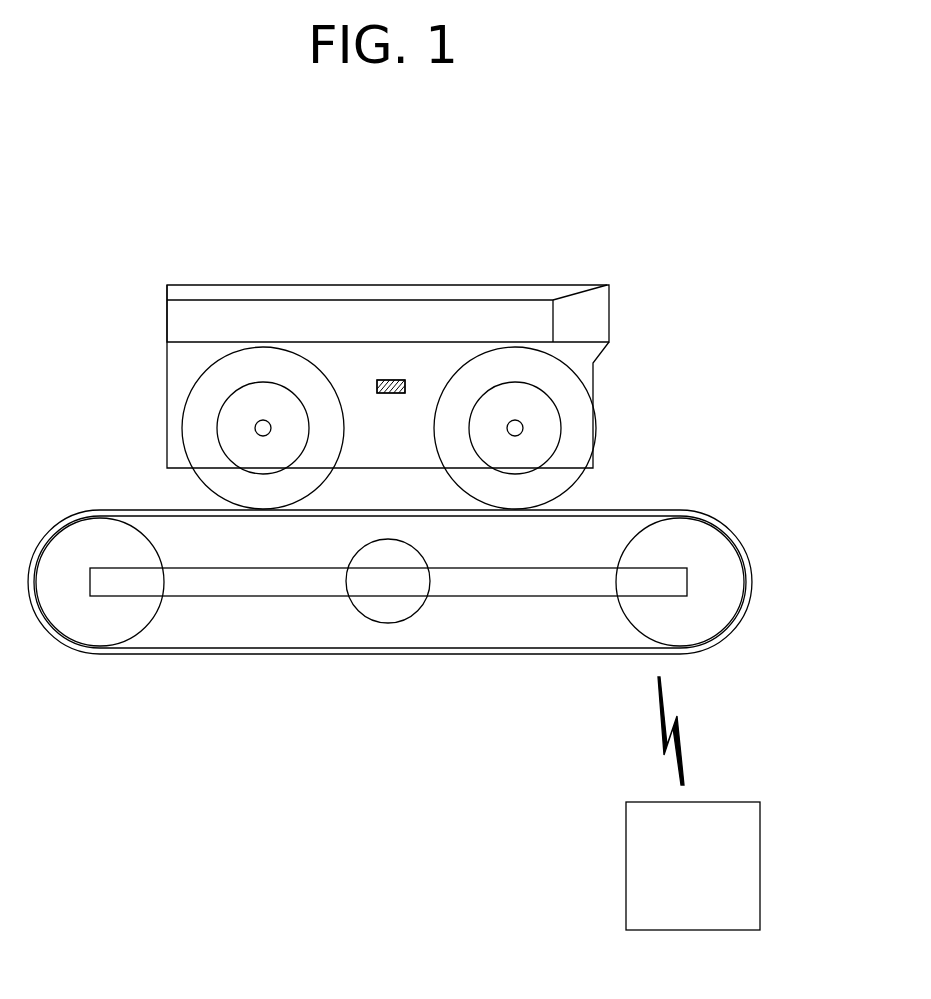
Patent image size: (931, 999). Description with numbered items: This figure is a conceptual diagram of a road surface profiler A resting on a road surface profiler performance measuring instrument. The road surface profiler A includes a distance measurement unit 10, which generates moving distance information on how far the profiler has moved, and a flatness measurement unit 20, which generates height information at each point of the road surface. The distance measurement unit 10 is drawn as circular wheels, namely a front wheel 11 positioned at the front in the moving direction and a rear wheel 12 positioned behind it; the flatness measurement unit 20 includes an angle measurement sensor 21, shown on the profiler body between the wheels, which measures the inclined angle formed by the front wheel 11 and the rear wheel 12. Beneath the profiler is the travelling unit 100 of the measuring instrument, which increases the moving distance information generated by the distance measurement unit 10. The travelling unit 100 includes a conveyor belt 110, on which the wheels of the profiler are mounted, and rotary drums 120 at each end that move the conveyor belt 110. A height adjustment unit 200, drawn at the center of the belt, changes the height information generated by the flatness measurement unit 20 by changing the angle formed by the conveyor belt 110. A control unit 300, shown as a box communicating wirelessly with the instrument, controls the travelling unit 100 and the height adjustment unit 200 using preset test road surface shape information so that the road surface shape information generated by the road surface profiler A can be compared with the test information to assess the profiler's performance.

The road surface profiler A is at (470, 292).
The distance measurement unit 10 is at (451, 428).
The front wheel 11 is at (558, 377).
The rear wheel 12 is at (325, 432).
The flatness measurement unit 20 is at (390, 382).
The angle measurement sensor 21 is at (391, 386).
The travelling unit 100 is at (390, 644).
The conveyor belt 110 is at (63, 642).
The rotary drums 120 is at (93, 630).
The height adjustment unit 200 is at (388, 595).
The control unit 300 is at (722, 802).